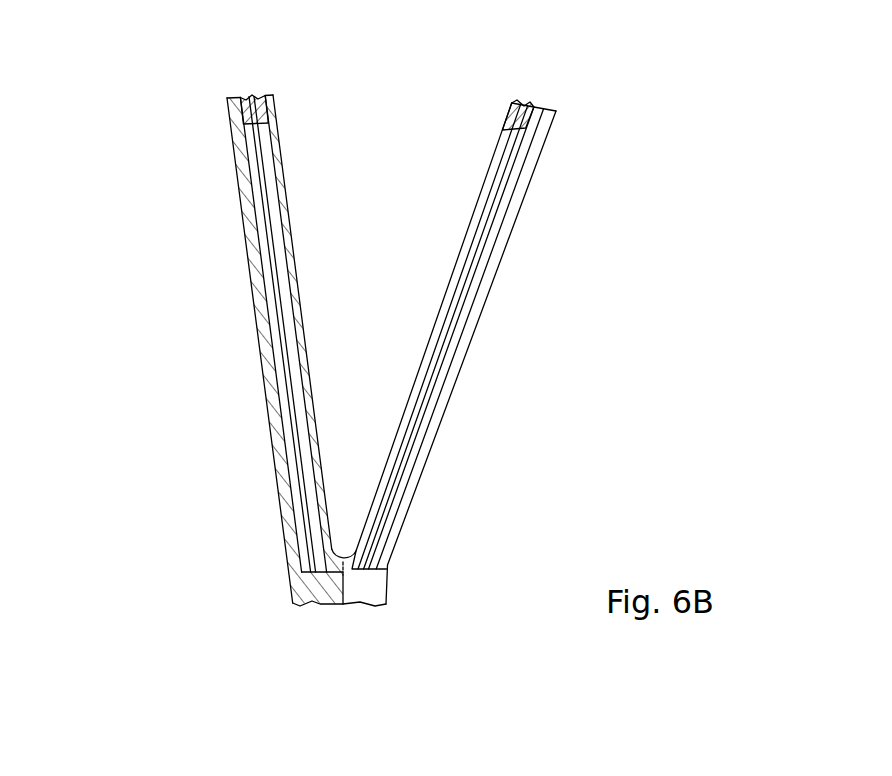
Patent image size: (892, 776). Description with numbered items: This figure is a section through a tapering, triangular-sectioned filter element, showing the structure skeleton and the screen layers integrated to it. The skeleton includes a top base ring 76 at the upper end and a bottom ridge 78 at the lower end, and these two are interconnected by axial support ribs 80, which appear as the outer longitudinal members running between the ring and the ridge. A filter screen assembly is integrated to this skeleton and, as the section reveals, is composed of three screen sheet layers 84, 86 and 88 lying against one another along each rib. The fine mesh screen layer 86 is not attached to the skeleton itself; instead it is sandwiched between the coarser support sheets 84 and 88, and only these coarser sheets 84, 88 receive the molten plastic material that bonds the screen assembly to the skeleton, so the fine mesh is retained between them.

The top base ring 76 is at (244, 96).
The bottom ridge 78 is at (356, 578).
The axial support ribs 80 is at (283, 177).
The screen sheet layer 84 is at (447, 302).
The fine mesh screen layer 86 is at (283, 318).
The screen sheet layer 88 is at (283, 372).